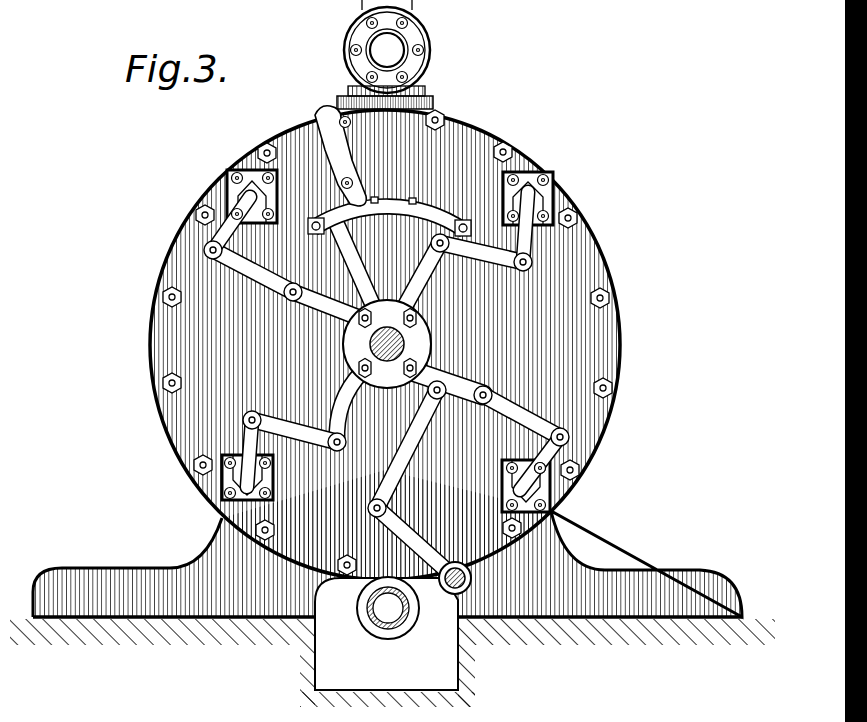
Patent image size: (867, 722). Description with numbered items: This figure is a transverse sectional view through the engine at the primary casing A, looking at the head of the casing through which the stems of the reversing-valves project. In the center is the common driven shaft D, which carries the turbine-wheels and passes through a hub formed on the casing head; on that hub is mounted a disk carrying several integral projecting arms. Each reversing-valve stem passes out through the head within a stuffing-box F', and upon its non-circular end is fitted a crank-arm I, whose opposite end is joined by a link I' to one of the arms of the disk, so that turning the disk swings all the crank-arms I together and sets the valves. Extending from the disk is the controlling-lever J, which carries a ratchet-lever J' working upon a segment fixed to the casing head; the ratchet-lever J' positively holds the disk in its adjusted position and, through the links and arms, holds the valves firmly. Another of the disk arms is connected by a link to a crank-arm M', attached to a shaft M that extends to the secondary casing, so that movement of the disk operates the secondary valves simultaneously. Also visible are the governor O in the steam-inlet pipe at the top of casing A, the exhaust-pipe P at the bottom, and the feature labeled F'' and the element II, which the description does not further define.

The governor O is at (425, 38).
The casing A is at (387, 363).
The stuffing-box F' is at (213, 331).
The guide bracket F'' is at (557, 342).
The crank-arm I is at (378, 341).
The link I' is at (386, 342).
The controlling-lever J is at (338, 265).
The ratchet-lever J' is at (357, 156).
The shaft D is at (372, 345).
The bracket bolt II is at (575, 452).
The crank-arm M' is at (411, 538).
The shaft bearing M is at (472, 605).
The exhaust-pipe P is at (388, 606).